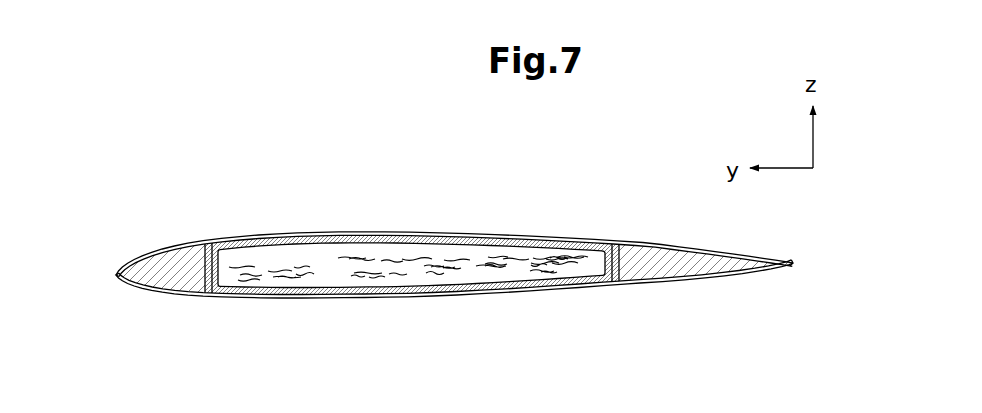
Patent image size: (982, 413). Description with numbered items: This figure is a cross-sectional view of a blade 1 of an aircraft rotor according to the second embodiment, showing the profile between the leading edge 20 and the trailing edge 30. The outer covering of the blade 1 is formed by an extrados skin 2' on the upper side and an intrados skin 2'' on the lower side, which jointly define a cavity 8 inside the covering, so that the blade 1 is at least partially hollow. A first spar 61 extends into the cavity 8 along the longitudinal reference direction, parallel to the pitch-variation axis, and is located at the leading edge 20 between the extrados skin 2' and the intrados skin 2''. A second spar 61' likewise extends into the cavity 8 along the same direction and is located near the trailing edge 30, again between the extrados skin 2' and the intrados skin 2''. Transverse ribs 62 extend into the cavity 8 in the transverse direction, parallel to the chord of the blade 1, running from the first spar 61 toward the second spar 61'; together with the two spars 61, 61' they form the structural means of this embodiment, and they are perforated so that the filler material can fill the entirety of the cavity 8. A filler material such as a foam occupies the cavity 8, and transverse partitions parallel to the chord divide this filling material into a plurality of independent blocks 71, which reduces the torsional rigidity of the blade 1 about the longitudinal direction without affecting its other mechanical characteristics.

The blade 1 is at (340, 172).
The extrados skin 2' is at (454, 209).
The intrados skin 2'' is at (454, 325).
The cavity 8 is at (512, 262).
The leading edge 20 is at (113, 277).
The trailing edge 30 is at (800, 263).
The first spar 61 is at (165, 238).
The second spar 61' is at (702, 295).
The transverse ribs 62 is at (502, 282).
The independent blocks 71 is at (312, 270).